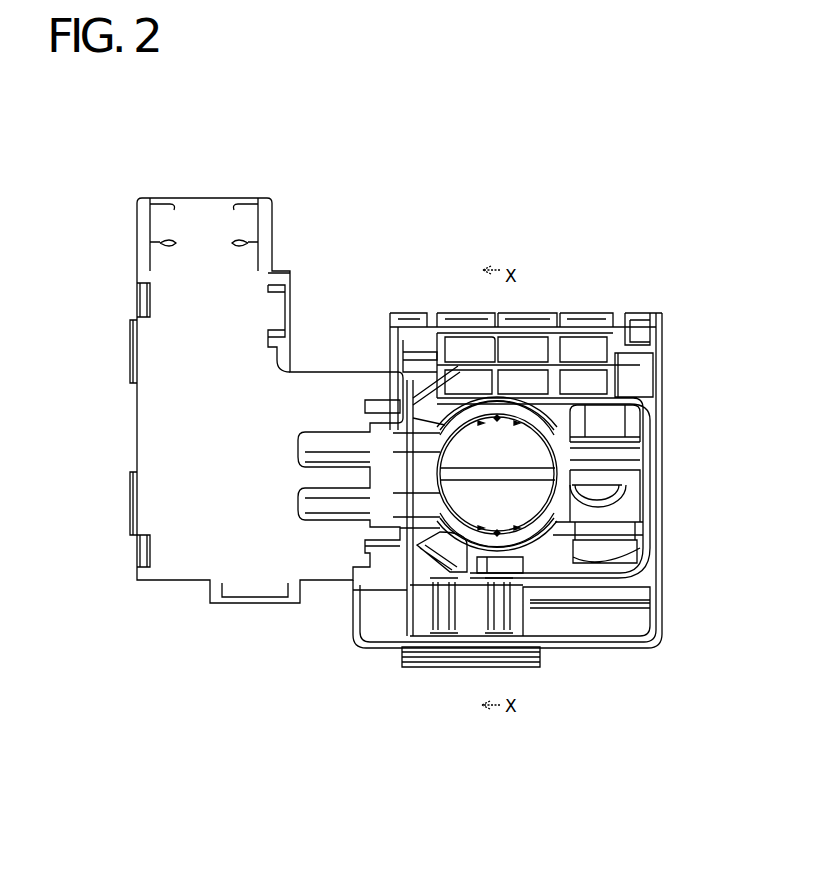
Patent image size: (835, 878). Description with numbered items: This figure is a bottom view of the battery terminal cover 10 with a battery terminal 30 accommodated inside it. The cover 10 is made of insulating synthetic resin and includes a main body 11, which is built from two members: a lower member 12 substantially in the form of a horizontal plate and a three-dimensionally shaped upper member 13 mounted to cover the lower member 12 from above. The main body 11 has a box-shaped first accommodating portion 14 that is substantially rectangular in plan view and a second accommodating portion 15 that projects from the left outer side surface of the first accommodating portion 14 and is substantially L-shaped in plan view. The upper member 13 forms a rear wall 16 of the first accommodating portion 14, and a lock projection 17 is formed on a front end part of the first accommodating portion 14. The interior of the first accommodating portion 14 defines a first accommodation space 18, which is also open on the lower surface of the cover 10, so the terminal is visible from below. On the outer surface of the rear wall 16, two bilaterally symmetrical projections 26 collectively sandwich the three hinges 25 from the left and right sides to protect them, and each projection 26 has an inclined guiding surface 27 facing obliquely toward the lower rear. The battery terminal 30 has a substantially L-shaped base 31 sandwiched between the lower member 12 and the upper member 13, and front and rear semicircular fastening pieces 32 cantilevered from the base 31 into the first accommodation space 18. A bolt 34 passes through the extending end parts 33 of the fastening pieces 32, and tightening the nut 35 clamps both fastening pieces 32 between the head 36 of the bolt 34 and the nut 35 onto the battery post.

The cover 10 is at (628, 227).
The main body 11 is at (360, 642).
The lower member 12 is at (320, 390).
The upper member 13 is at (268, 217).
The first accommodating portion 14 is at (628, 283).
The second accommodating portion 15 is at (158, 605).
The rear wall 16 is at (537, 327).
The lock projection 17 is at (468, 612).
The first accommodation space 18 is at (551, 548).
The hinges 25 is at (458, 320).
The projections 26 is at (408, 320).
The guiding surface 27 is at (397, 317).
The battery terminal 30 is at (455, 548).
The base 31 is at (410, 478).
The fastening pieces 32 is at (520, 415).
The extending end parts 33 is at (623, 458).
The bolt 34 is at (605, 497).
The nut 35 is at (617, 552).
The head 36 is at (613, 425).